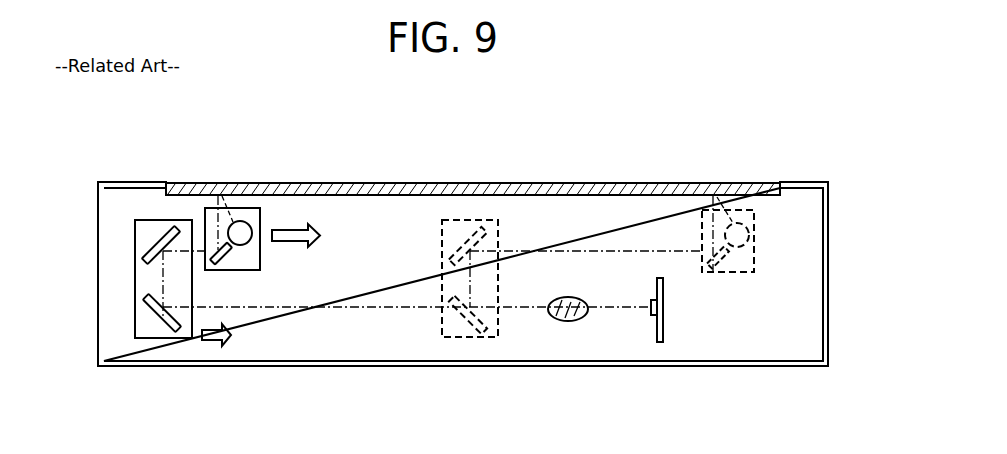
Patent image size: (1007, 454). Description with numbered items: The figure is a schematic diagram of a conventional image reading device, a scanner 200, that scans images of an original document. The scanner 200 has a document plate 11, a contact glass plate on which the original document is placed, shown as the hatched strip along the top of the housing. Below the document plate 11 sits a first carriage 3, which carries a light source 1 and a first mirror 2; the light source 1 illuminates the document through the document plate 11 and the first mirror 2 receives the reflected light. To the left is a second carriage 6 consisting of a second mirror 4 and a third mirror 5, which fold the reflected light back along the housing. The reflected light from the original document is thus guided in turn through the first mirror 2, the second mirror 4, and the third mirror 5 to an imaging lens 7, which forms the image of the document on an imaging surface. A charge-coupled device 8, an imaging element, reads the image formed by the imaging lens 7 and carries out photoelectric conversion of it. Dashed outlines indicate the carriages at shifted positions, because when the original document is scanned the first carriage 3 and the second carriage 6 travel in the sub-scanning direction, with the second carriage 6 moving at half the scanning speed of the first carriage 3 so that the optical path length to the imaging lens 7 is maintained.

The scanner 200 is at (692, 148).
The document plate 11 is at (481, 183).
The light source 1 is at (259, 215).
The first mirror 2 is at (236, 259).
The first carriage 3 is at (192, 205).
The second mirror 4 is at (150, 240).
The third mirror 5 is at (148, 322).
The second carriage 6 is at (133, 319).
The imaging lens 7 is at (566, 328).
The charge-coupled device 8 is at (652, 330).